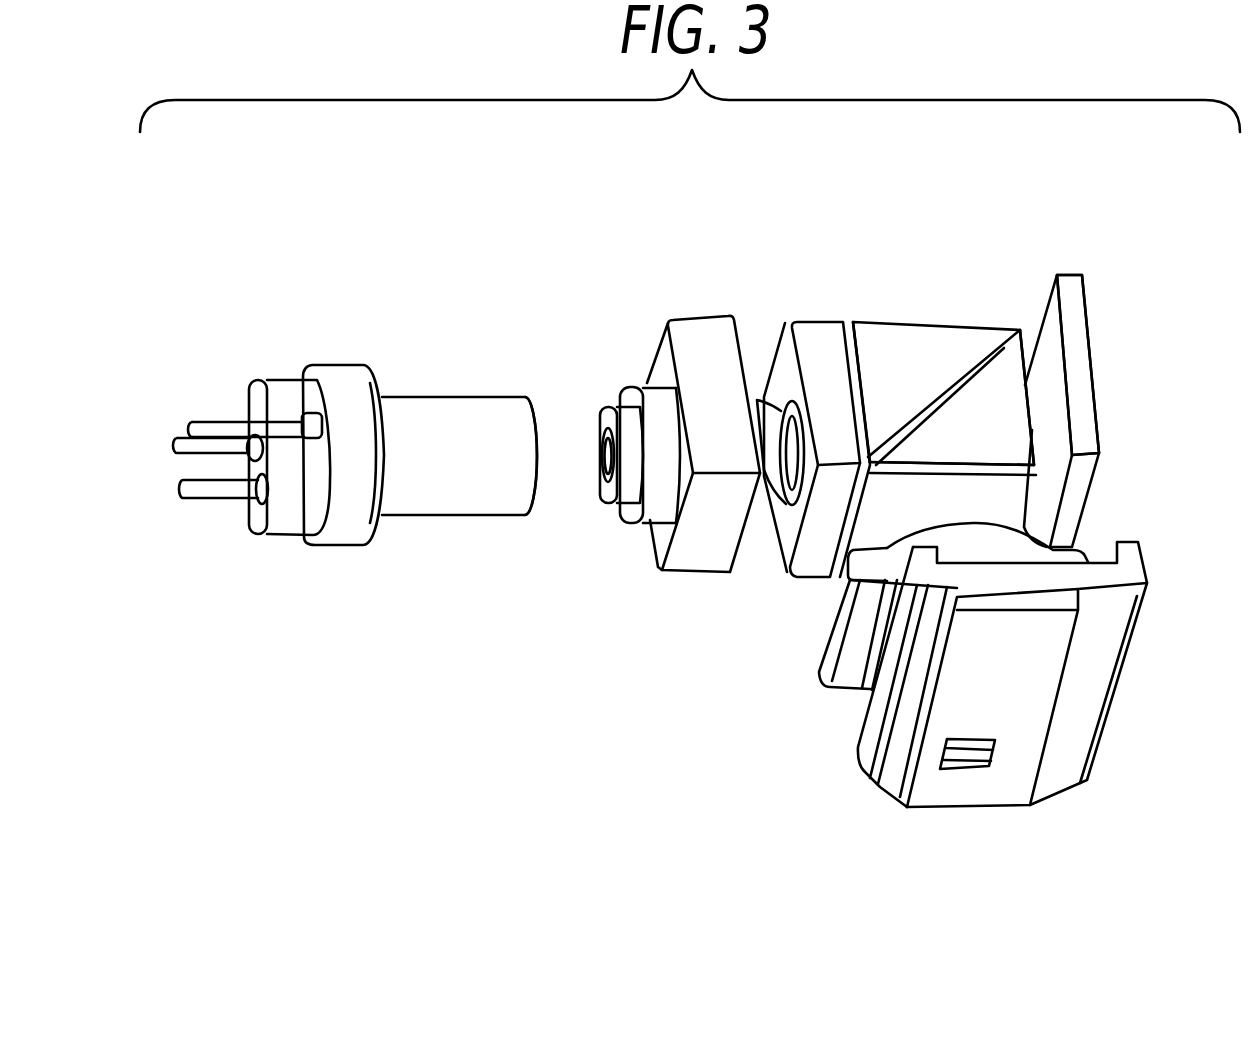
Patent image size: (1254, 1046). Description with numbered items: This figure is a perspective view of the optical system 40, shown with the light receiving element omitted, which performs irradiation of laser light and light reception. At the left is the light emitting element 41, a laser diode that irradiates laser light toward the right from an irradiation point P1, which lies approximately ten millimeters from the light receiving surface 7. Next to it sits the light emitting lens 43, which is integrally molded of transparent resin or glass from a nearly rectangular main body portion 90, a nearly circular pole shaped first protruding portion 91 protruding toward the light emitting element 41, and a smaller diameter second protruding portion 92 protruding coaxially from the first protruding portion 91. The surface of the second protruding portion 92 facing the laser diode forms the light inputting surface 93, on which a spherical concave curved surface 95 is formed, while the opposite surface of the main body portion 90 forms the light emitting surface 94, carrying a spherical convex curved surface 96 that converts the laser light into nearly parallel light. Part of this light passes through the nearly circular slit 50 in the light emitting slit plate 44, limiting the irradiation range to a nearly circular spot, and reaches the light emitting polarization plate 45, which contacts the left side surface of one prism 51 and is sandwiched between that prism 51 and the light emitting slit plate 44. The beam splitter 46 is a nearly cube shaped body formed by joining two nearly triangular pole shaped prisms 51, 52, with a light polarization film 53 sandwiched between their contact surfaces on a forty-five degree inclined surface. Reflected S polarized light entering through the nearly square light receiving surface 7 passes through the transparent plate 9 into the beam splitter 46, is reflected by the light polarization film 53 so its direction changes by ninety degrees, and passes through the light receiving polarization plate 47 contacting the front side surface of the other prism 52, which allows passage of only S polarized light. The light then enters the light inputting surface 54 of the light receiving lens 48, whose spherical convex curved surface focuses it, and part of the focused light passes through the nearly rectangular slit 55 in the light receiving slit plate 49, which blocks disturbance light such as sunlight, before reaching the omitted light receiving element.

The optical system 40 is at (514, 698).
The light emitting element 41 is at (437, 407).
The irradiation point P1 is at (543, 395).
The concave curved surface 95 is at (601, 440).
The light inputting surface 93 is at (603, 498).
The second protruding portion 92 is at (610, 522).
The first protruding portion 91 is at (650, 517).
The main body portion 90 is at (702, 573).
The light emitting surface 94 is at (748, 552).
The light emitting lens 43 is at (700, 330).
The convex curved surface 96 is at (763, 505).
The slit 50 is at (760, 395).
The light emitting slit plate 44 is at (817, 337).
The light emitting polarization plate 45 is at (858, 353).
The beam splitter 46 is at (932, 342).
The prism 51 is at (962, 338).
The light polarization film 53 is at (1000, 347).
The light receiving polarization plate 47 is at (1010, 487).
The light receiving surface 7 is at (1100, 314).
The transparent plate 9 is at (1092, 367).
The prism 52 is at (1018, 418).
The light inputting surface 54 is at (987, 524).
The light receiving slit plate 49 is at (1090, 683).
The light receiving lens 48 is at (816, 658).
The slit 55 is at (962, 772).